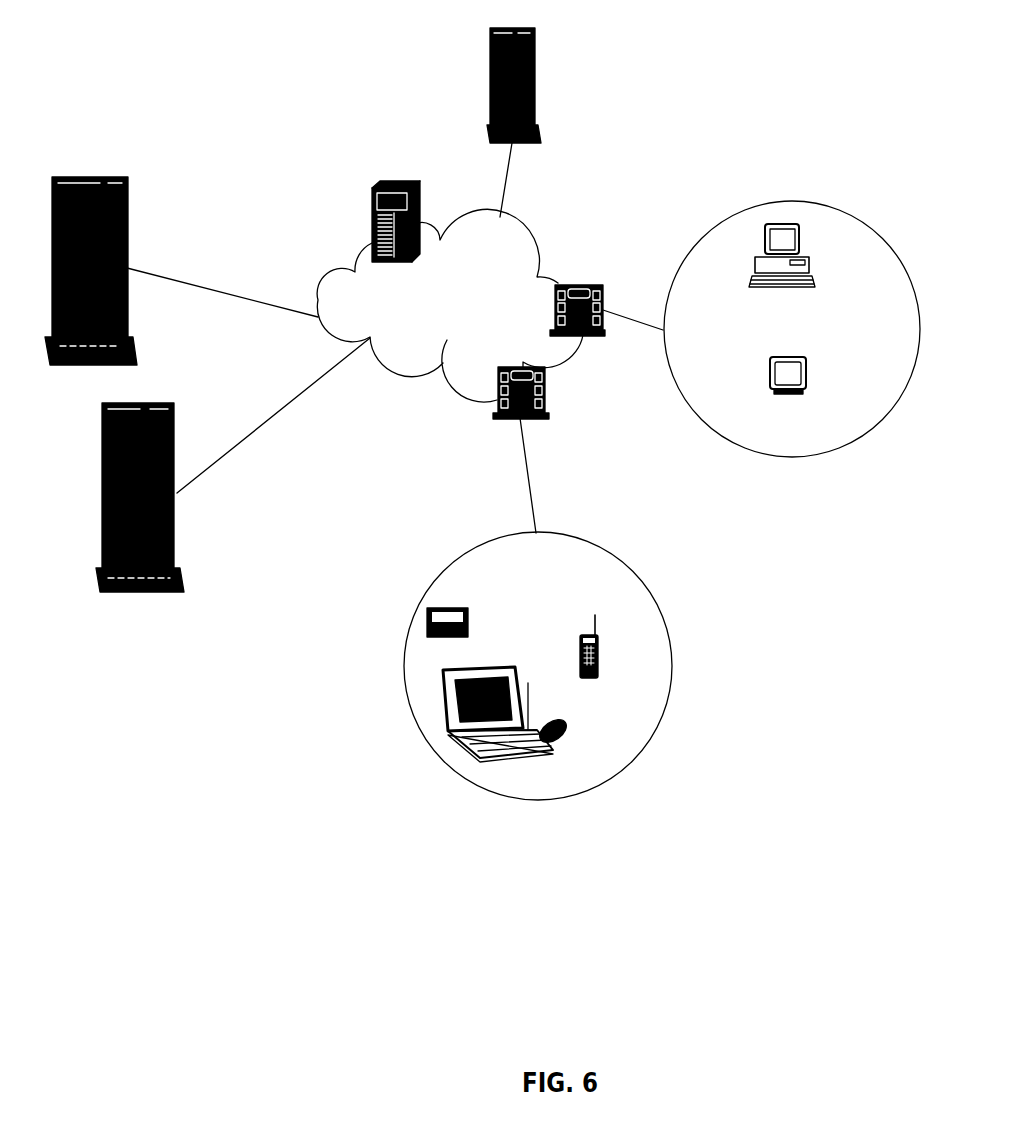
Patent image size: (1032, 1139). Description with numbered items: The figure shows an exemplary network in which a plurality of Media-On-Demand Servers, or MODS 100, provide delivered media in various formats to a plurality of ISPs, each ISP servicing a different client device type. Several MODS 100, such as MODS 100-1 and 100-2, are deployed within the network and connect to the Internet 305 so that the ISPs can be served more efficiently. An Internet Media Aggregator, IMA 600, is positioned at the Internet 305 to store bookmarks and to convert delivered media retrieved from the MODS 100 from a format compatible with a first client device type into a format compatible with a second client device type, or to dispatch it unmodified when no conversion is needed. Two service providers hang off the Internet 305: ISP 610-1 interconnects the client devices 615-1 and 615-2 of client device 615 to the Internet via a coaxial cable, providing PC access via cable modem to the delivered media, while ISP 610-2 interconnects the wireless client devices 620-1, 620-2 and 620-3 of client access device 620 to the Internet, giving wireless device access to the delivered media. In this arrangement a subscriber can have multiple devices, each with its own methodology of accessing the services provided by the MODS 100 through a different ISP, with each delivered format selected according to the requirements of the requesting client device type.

The MODS 100 is at (183, 578).
The MODS 100-1 is at (128, 228).
The MODS 100-2 is at (490, 85).
The Internet 305 is at (450, 305).
The Internet Media Aggregator (IMA) 600 is at (372, 200).
The ISP 610-1 is at (585, 286).
The ISP 610-2 is at (547, 410).
The requesting client device 615 is at (694, 241).
The client device 615-1 is at (808, 262).
The client device 615-2 is at (808, 360).
The requesting client device 620 is at (660, 592).
The wireless client device 620-1 is at (531, 757).
The wireless client device 620-2 is at (437, 608).
The wireless client device 620-3 is at (598, 641).